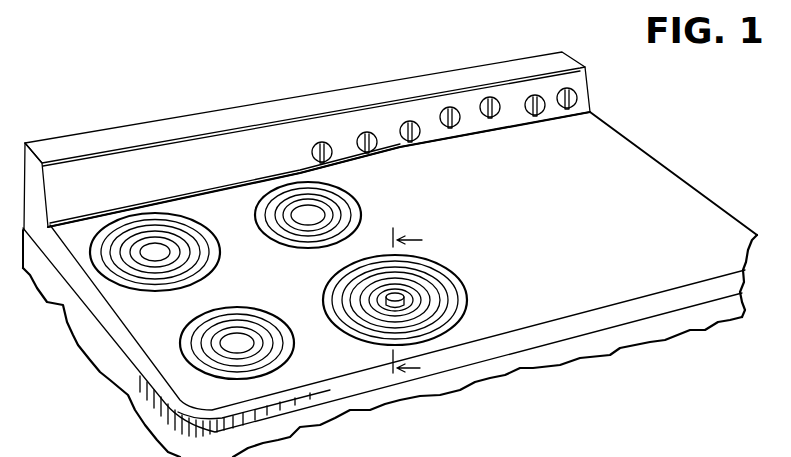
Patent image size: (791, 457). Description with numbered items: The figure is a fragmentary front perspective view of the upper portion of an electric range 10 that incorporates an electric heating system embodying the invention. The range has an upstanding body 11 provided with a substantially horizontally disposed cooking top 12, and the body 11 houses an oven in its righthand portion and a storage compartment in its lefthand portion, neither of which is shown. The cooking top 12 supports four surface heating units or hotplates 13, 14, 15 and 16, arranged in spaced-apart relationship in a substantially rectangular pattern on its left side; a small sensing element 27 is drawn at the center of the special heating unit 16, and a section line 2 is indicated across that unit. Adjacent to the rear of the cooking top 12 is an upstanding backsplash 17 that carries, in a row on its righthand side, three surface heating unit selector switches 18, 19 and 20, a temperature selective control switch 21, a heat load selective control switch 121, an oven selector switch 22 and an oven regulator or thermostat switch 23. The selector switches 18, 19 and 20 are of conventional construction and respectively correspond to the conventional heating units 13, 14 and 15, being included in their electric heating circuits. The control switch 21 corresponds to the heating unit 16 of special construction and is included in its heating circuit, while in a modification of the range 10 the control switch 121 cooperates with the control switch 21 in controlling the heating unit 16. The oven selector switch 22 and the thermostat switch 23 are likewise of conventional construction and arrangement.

The section line 2- 2 is at (416, 304).
The electric range 10 is at (50, 357).
The upstanding body 11 is at (128, 379).
The cooking top 12 is at (696, 212).
The surface heating unit 13 is at (263, 351).
The surface heating unit 14 is at (207, 260).
The surface heating unit 15 is at (342, 210).
The surface heating unit 16 is at (443, 278).
The backsplash 17 is at (246, 112).
The surface heating unit selector switch 18 is at (322, 142).
The surface heating unit selector switch 19 is at (367, 132).
The surface heating unit selector switch 20 is at (410, 121).
The temperature selective control switch 21 is at (450, 107).
The heat load selective control switch 121 is at (490, 97).
The oven selector switch 22 is at (535, 95).
The oven regulator or thermostat switch 23 is at (570, 88).
The temperature sensor 27 is at (395, 303).